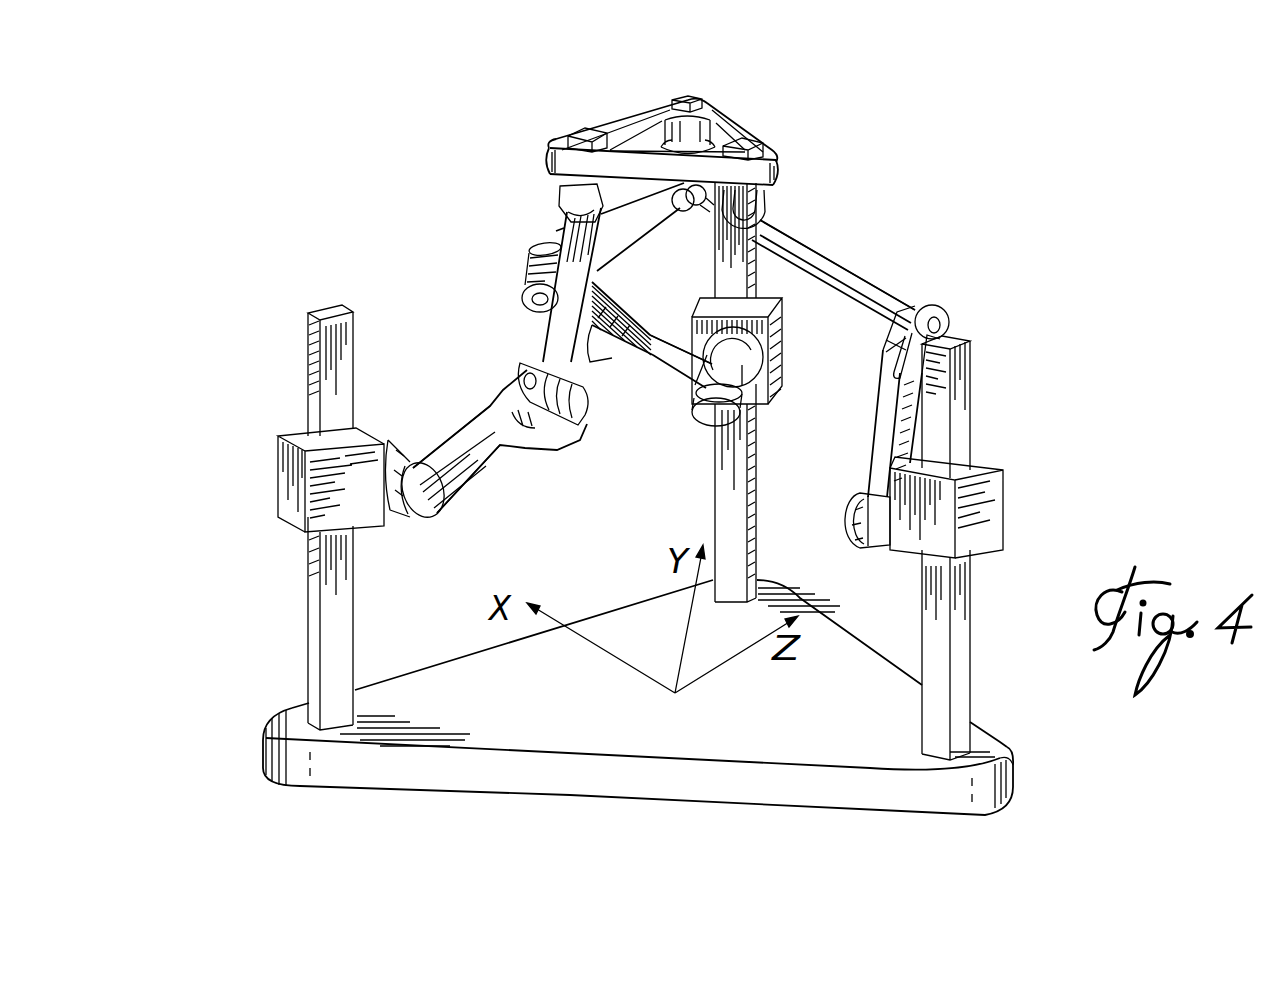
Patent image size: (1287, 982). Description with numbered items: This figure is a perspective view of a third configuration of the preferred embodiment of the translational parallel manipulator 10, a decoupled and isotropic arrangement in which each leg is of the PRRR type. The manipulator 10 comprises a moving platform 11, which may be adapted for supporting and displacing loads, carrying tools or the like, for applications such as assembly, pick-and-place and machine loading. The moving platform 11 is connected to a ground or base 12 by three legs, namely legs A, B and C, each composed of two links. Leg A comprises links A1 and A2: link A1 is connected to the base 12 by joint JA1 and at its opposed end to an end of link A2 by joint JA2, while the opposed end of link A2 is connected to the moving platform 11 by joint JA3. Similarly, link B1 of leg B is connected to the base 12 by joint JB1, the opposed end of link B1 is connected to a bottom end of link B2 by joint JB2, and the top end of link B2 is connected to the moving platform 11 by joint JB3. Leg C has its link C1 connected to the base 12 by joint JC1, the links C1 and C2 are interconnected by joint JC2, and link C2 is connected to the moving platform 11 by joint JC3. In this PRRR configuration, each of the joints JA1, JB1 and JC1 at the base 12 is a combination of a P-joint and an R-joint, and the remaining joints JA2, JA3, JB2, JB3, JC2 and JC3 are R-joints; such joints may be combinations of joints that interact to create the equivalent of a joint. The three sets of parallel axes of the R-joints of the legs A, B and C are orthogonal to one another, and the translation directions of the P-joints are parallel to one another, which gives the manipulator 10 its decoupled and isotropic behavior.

The translational parallel manipulator 10 is at (372, 215).
The moving platform 11 is at (727, 123).
The base 12 is at (700, 782).
The leg A is at (549, 447).
The link A1 is at (460, 468).
The link A2 is at (553, 337).
The leg B is at (632, 370).
The link B1 is at (660, 338).
The link B2 is at (622, 227).
The leg C is at (927, 288).
The link C1 is at (884, 405).
The link C2 is at (832, 268).
The joint JA1 is at (399, 530).
The joint JA2 is at (526, 377).
The joint JA3 is at (590, 205).
The joint JB1 is at (690, 432).
The joint JB2 is at (532, 296).
The joint JB3 is at (702, 198).
The joint JC1 is at (848, 542).
The joint JC2 is at (950, 320).
The joint JC3 is at (766, 214).